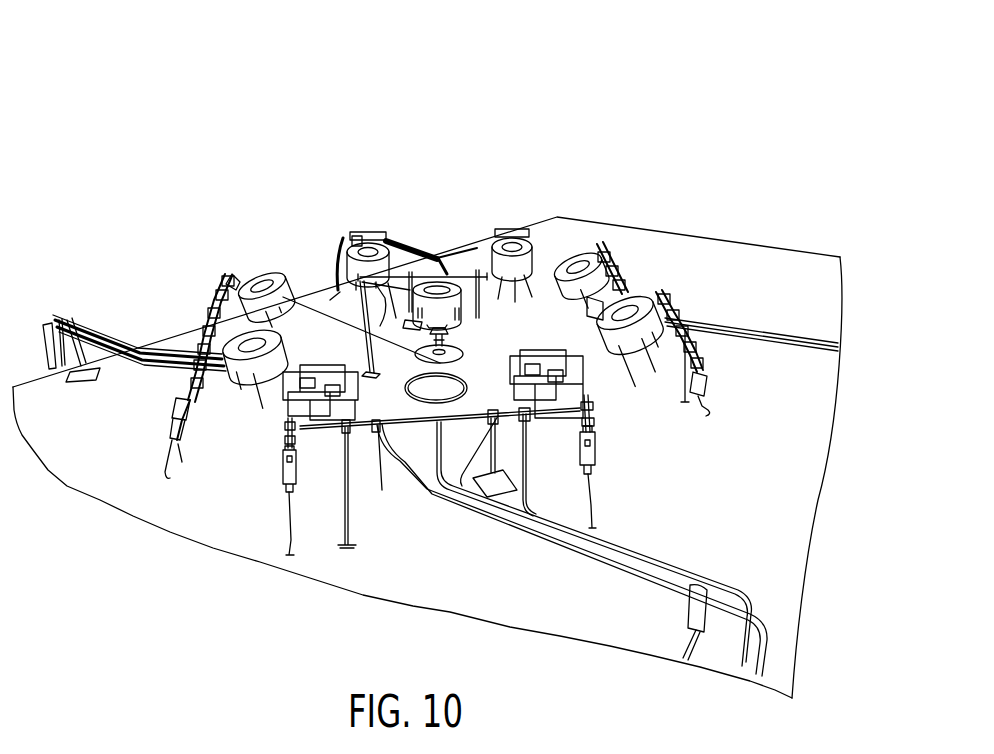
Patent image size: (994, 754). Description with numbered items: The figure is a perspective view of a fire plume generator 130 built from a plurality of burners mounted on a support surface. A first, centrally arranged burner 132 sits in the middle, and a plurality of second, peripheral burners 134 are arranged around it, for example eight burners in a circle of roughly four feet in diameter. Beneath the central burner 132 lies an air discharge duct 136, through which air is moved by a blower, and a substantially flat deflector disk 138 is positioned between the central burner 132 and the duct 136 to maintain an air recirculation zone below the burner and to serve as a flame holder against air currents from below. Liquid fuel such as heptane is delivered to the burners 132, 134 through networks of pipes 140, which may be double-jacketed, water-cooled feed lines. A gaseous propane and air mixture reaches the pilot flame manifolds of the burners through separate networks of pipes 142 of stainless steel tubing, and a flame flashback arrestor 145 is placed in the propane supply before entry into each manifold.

The fire plume generator 130 is at (148, 68).
The first, centrally arranged burner 132 is at (456, 286).
The second, peripheral burners 134 is at (280, 252).
The air discharge duct 136 is at (420, 386).
The deflector disk 138 is at (456, 352).
The pipes 140 is at (448, 275).
The pipes 142 is at (226, 272).
The flame flashback arrestor 145 is at (146, 417).